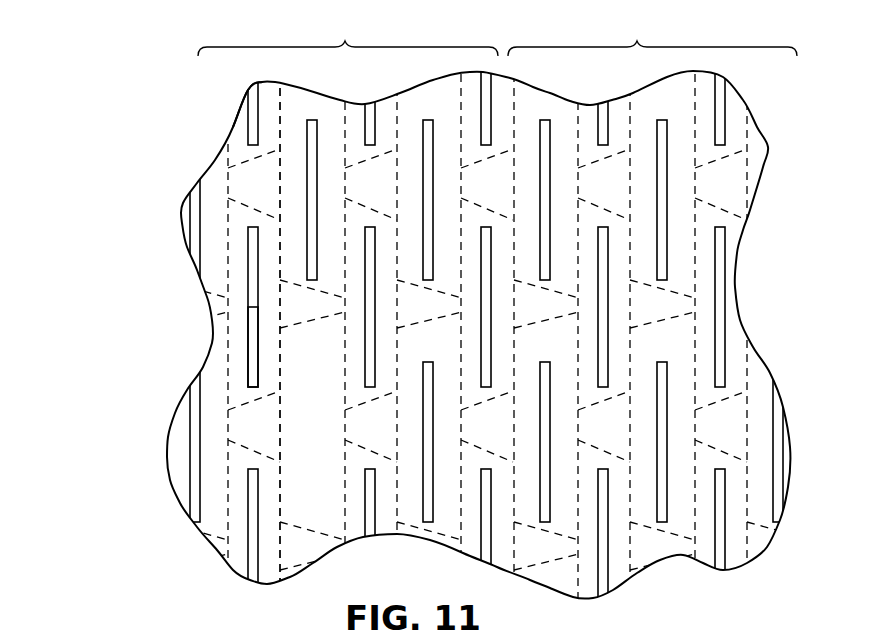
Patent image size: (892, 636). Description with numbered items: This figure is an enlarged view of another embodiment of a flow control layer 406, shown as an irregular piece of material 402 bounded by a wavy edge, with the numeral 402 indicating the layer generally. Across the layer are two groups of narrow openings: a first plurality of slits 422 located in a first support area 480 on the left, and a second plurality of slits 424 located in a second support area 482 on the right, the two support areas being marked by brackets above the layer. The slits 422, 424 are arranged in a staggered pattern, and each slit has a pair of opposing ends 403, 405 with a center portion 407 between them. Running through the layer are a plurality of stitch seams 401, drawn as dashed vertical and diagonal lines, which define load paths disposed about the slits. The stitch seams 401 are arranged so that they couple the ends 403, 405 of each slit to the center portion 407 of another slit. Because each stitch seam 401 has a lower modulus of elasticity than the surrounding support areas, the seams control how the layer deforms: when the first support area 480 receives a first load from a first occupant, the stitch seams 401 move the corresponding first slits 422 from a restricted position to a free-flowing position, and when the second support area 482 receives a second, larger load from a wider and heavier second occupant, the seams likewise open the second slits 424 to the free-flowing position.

The stitch seams 401 is at (280, 118).
The sheet 402 is at (108, 128).
The opposing end 403 is at (248, 247).
The opposing end 405 is at (248, 352).
The flow control layer 406 is at (210, 149).
The center portion 407 is at (365, 302).
The first plurality of slits 422 is at (423, 131).
The second plurality of slits 424 is at (717, 106).
The first support area 480 is at (348, 33).
The second support area 482 is at (652, 33).